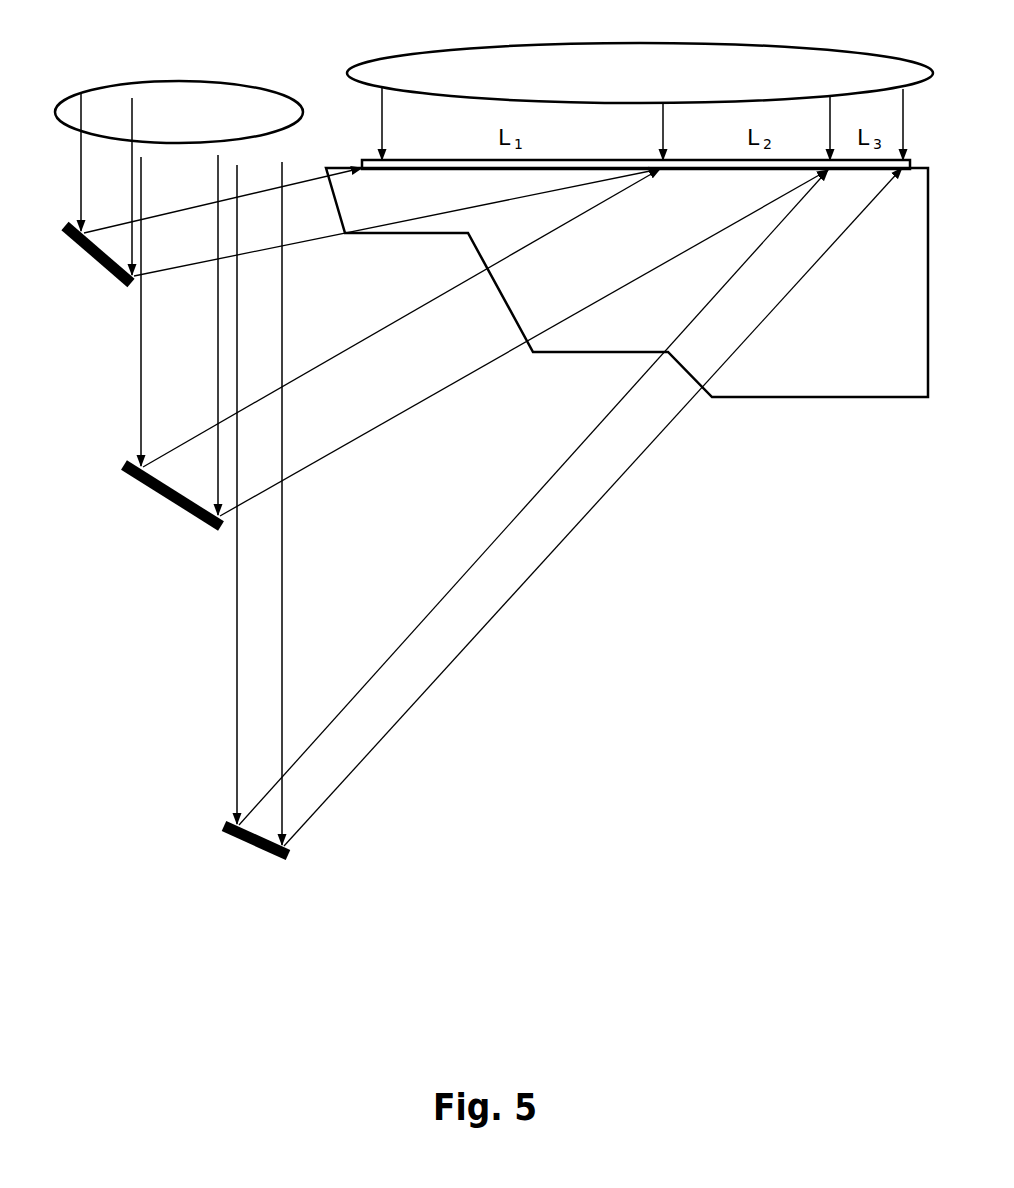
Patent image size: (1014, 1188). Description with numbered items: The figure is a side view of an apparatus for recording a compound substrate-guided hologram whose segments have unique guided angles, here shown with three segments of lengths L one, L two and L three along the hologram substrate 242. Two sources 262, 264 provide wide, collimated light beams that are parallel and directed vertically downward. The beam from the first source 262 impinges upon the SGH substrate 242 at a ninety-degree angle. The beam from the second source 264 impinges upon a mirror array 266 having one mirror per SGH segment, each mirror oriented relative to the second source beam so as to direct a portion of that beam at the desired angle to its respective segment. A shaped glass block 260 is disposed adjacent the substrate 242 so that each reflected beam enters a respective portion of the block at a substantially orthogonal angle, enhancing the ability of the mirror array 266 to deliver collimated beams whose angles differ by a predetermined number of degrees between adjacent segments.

The light incident surface 242 is at (581, 160).
The shaped glass block 260 is at (858, 321).
The first source 262 is at (640, 101).
The second source 264 is at (179, 463).
The mirror array 266 is at (147, 916).